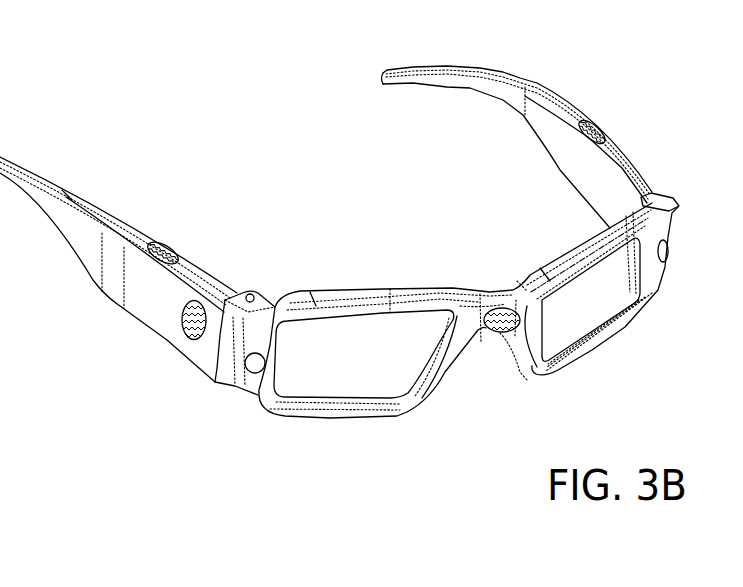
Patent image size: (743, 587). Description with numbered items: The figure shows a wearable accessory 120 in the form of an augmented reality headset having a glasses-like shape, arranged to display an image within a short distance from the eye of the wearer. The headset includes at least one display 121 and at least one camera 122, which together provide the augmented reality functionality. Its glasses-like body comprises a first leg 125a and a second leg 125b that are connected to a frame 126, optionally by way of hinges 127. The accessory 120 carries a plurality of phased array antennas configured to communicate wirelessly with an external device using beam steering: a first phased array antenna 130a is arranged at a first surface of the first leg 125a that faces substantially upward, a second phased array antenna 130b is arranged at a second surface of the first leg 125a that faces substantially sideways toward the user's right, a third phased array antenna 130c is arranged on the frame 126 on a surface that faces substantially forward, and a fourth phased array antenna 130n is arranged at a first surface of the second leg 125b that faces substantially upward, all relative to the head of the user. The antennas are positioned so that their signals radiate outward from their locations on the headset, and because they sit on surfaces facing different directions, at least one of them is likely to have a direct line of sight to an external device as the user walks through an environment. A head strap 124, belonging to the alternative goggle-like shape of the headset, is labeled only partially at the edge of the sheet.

The wearable accessory 120 is at (197, 99).
The display 121 is at (395, 325).
The camera 122 is at (251, 373).
The head strap 124 is at (0, 572).
The first leg 125a is at (197, 258).
The second leg 125b is at (610, 140).
The frame 126 is at (562, 245).
The hinge 127 is at (256, 292).
The first phased array antenna 130a is at (164, 243).
The second phased array antenna 130b is at (187, 338).
The third phased array antenna 130c is at (500, 334).
The fourth phased array antenna 130n is at (592, 124).